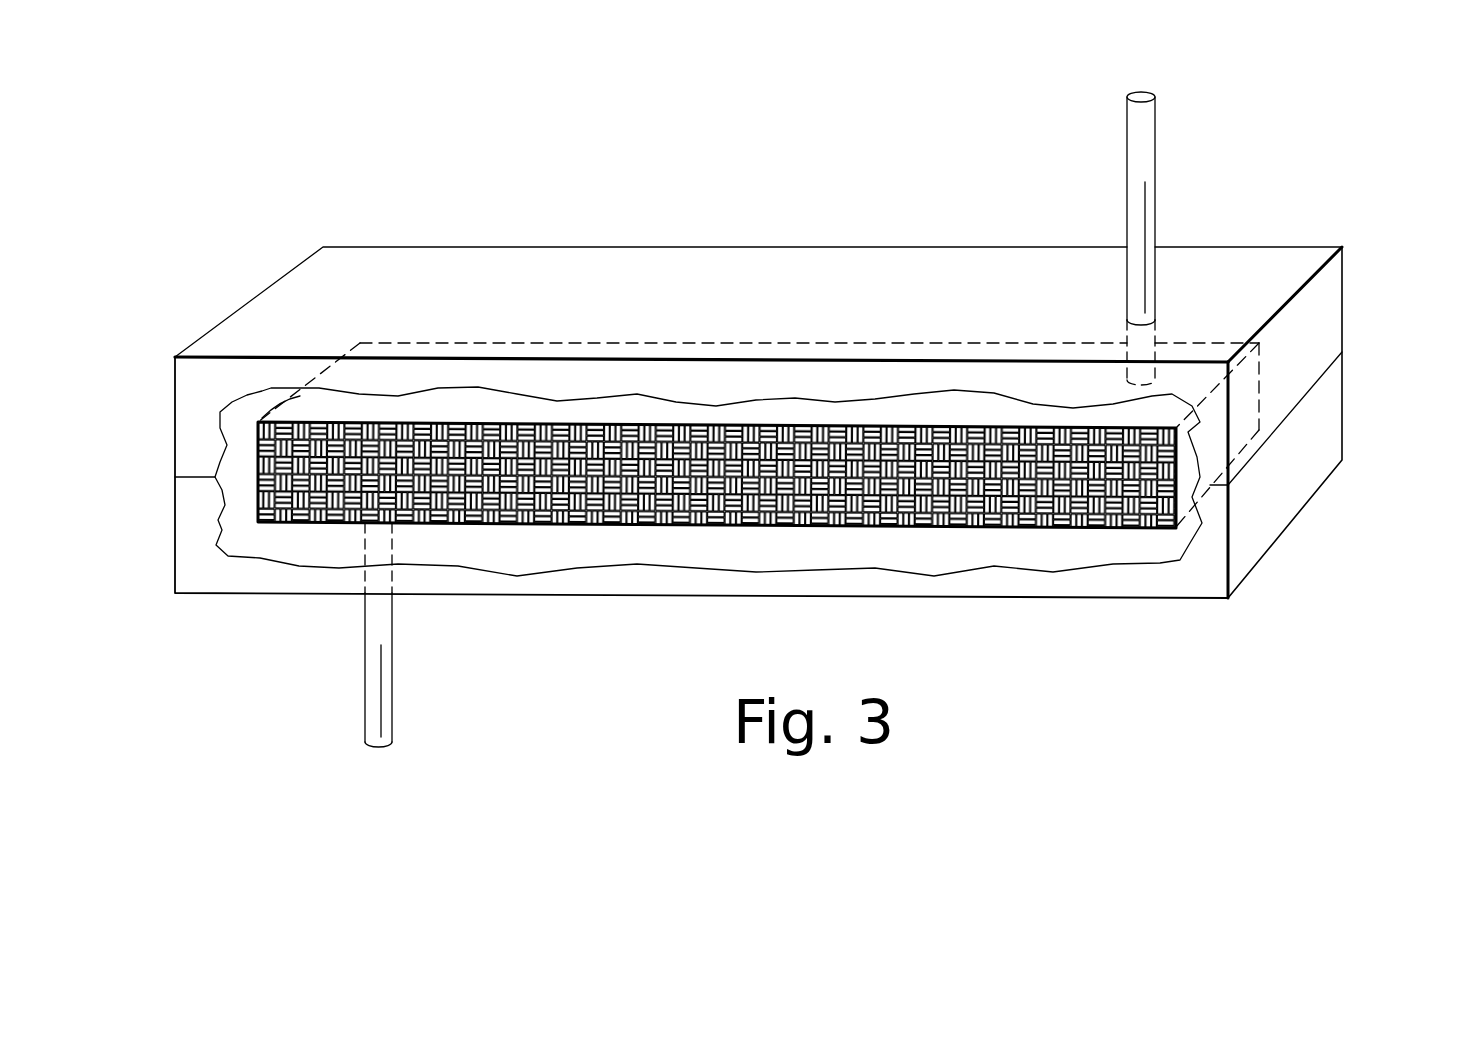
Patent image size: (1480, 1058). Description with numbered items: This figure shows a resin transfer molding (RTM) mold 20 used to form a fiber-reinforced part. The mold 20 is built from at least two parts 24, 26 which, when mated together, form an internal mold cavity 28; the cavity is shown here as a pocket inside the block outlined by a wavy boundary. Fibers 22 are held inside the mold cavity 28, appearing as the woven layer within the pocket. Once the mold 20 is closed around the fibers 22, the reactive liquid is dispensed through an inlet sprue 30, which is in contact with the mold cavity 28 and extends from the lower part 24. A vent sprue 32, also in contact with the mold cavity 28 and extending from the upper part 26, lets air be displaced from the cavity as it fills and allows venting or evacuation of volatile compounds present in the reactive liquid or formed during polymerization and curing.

The mold 20 is at (827, 419).
The fibers 22 is at (357, 423).
The mold part 24 is at (1167, 580).
The mold part 26 is at (1250, 261).
The mold cavity 28 is at (1190, 450).
The inlet sprue 30 is at (365, 700).
The vent sprue 32 is at (1135, 158).